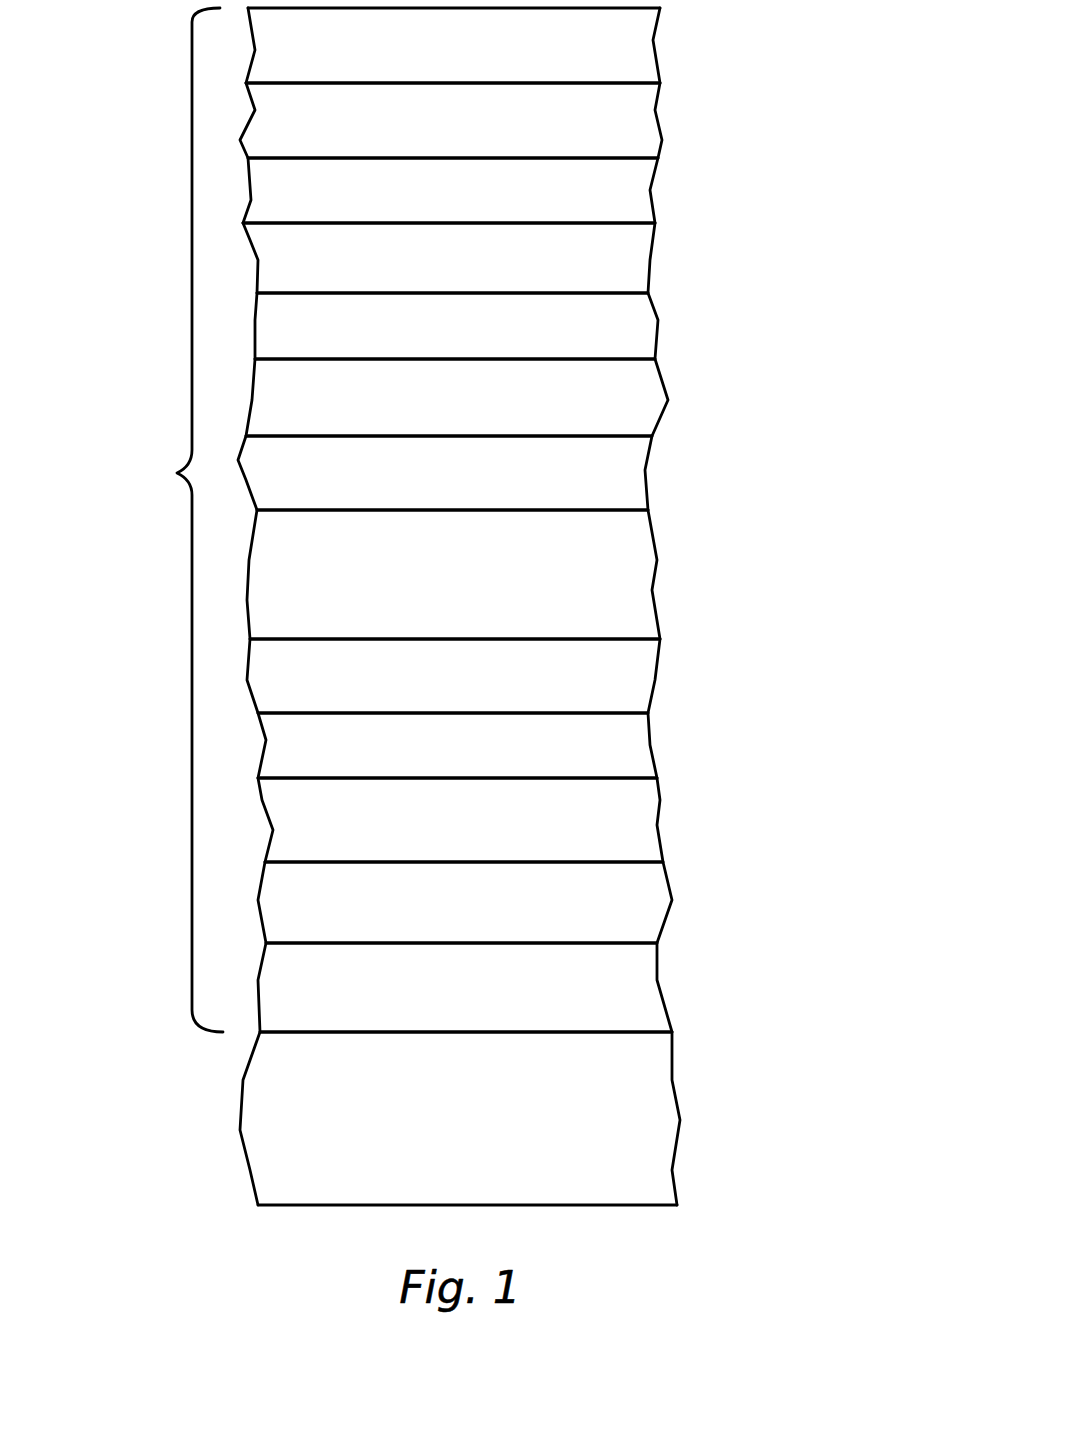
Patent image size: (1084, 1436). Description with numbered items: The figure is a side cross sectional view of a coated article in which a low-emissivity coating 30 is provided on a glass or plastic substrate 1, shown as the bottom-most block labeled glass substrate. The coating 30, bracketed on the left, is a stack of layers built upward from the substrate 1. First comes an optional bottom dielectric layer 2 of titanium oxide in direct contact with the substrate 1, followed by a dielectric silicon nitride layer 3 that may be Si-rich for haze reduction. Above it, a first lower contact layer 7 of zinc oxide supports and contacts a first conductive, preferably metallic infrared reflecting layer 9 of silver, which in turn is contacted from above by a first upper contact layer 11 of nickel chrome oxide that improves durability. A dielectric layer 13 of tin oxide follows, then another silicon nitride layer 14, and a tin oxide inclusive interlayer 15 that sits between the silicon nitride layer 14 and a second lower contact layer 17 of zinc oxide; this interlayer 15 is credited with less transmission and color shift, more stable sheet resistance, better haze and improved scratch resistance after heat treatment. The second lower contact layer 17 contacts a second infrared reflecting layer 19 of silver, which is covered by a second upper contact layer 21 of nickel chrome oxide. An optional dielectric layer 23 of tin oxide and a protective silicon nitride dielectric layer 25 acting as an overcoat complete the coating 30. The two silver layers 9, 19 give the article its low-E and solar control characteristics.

The substrate 1 is at (602, 1123).
The bottom dielectric layer 2 is at (607, 977).
The dielectric silicon nitride layer 3 is at (618, 905).
The first lower contact layer 7 is at (610, 823).
The first IR reflecting layer 9 is at (617, 746).
The first upper contact layer 11 is at (607, 676).
The dielectric layer 13 is at (583, 590).
The silicon nitride layer 14 is at (612, 470).
The tin oxide inclusive interlayer 15 is at (607, 399).
The second lower contact layer 17 is at (612, 317).
The second IR reflecting layer 19 is at (602, 257).
The second upper contact layer 21 is at (603, 193).
The dielectric layer 23 is at (607, 127).
The protective dielectric layer 25 is at (628, 57).
The coating 30 is at (177, 473).